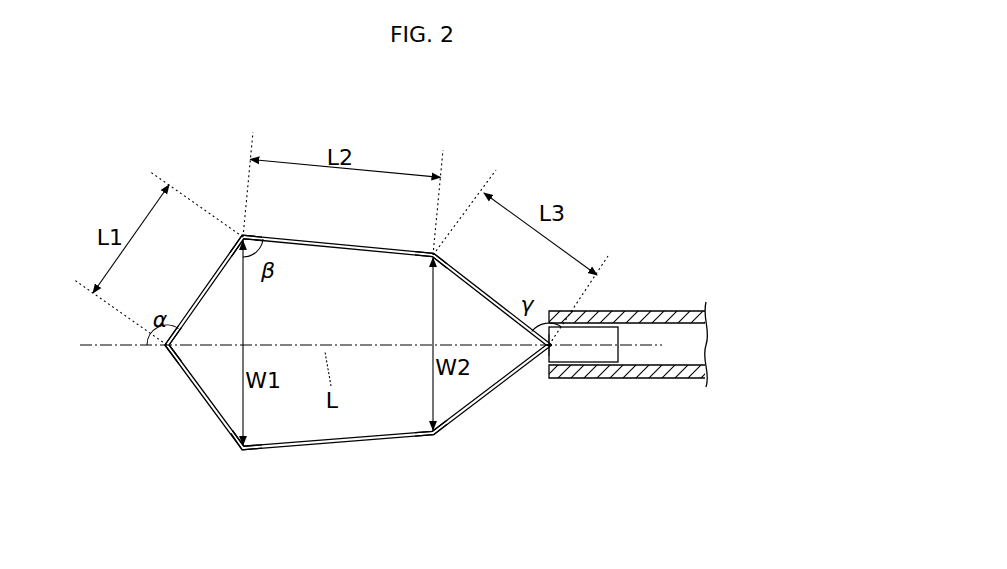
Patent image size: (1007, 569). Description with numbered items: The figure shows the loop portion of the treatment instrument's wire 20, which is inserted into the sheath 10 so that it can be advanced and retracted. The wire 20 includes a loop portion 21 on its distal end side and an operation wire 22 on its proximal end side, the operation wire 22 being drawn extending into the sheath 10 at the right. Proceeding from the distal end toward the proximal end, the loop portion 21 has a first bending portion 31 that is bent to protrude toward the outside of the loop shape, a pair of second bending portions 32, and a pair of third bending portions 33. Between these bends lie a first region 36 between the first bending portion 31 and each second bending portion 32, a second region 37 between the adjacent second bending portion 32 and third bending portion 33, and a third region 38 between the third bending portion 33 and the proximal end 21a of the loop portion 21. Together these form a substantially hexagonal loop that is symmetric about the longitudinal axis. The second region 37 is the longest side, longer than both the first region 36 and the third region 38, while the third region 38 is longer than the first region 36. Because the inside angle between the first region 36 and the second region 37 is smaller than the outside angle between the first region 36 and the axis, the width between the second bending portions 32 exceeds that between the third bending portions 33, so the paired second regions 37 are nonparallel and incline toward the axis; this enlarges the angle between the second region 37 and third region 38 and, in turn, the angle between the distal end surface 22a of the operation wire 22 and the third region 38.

The sheath 10 is at (616, 328).
The wire 20 is at (332, 339).
The loop portion 21 is at (514, 142).
The proximal end of the loop portion 21a is at (558, 352).
The operation wire 22 is at (670, 379).
The distal end surface of the operation wire 22a is at (553, 364).
The first bending portion 31 is at (164, 349).
The second bending portion 32 is at (242, 236).
The third bending portion 33 is at (436, 253).
The first region 36 is at (207, 286).
The second region 37 is at (348, 244).
The third region 38 is at (490, 298).